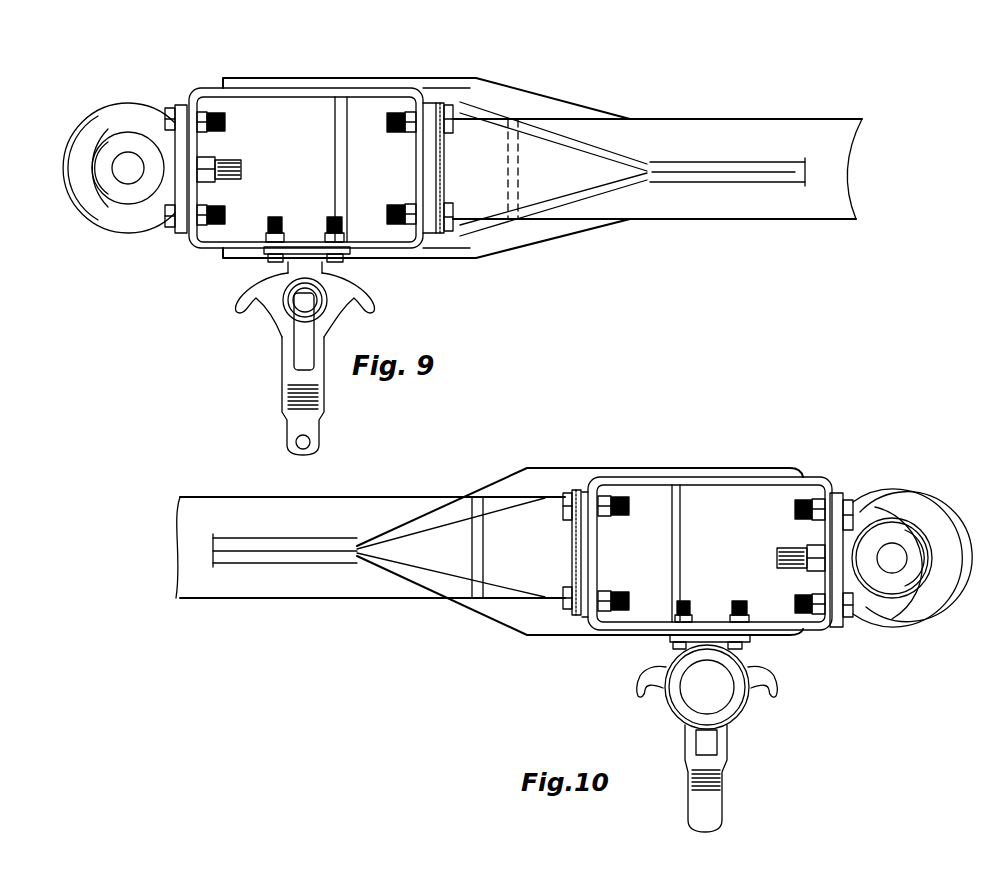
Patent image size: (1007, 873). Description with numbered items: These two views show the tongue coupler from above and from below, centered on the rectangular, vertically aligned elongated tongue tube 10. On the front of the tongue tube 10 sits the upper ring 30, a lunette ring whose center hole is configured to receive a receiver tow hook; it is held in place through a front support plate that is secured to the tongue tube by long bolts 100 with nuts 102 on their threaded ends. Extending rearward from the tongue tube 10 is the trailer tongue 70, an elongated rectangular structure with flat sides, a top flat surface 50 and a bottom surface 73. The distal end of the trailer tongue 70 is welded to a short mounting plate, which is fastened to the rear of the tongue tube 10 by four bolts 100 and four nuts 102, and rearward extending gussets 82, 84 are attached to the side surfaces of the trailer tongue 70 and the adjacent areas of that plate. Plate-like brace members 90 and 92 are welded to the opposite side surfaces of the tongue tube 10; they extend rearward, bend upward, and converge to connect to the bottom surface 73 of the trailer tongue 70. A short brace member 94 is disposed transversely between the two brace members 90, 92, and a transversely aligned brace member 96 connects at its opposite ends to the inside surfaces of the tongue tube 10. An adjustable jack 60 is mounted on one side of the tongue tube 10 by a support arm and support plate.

In FIG. 9, the tongue tube 10 is at (208, 83).
In FIG. 10, the tongue tube 10 is at (797, 477).
In FIG. 10, the upper ring 30 is at (928, 515).
In FIG. 10, the top flat surface 50 is at (905, 508).
In FIG. 9, the adjustable jack 60 is at (229, 308).
In FIG. 10, the adjustable jack 60 is at (638, 683).
In FIG. 9, the trailer tongue 70 is at (648, 119).
In FIG. 10, the trailer tongue 70 is at (218, 497).
In FIG. 10, the bottom surface 73 is at (207, 520).
In FIG. 9, the gusset 82 is at (455, 226).
In FIG. 9, the gusset 84 is at (460, 114).
In FIG. 10, the brace member 90 is at (492, 609).
In FIG. 10, the brace member 92 is at (487, 486).
In FIG. 9, the short brace member 94 is at (520, 158).
In FIG. 10, the short brace member 94 is at (471, 551).
In FIG. 9, the transversely aligned brace member 96 is at (336, 137).
In FIG. 10, the transversely aligned brace member 96 is at (681, 530).
In FIG. 9, the long bolts 100 is at (440, 103).
In FIG. 10, the long bolts 100 is at (562, 497).
In FIG. 9, the nuts 102 is at (412, 155).
In FIG. 10, the nuts 102 is at (607, 518).